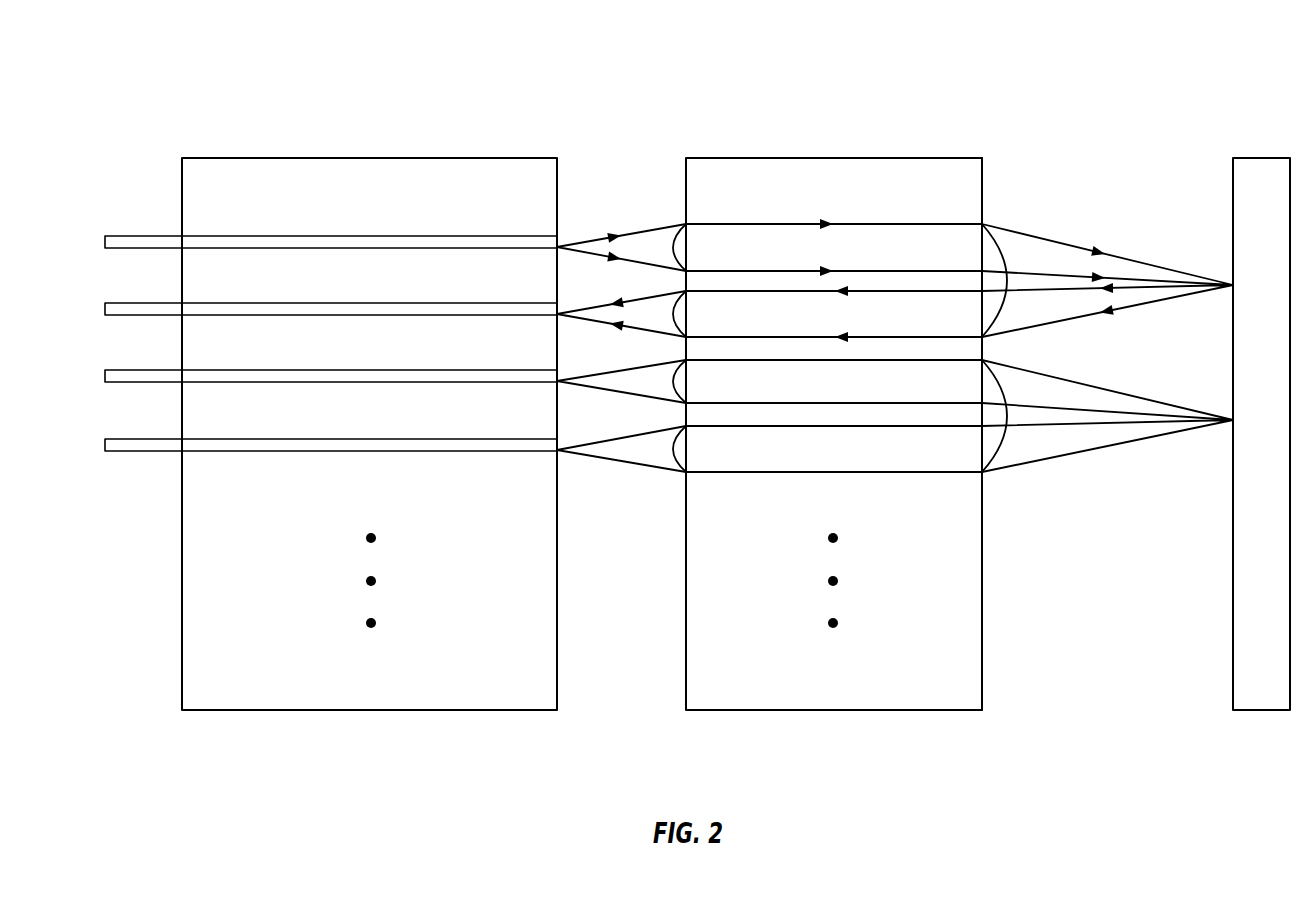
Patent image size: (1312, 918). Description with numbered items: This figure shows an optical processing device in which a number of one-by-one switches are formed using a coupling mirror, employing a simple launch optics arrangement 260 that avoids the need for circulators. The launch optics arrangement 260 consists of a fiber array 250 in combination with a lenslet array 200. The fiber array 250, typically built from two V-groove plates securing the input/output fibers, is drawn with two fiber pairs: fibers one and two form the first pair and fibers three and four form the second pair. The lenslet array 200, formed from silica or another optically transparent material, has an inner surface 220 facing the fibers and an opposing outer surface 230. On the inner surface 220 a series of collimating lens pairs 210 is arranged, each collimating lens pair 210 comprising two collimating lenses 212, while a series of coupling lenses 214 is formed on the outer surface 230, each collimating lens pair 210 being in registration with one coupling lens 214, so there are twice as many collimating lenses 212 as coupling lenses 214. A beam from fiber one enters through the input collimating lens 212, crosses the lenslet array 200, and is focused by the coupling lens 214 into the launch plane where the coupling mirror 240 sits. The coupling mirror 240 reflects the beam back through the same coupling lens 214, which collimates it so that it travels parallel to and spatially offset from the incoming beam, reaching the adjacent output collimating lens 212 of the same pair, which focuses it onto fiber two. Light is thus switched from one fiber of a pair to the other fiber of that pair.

The lenslet array 200 is at (955, 697).
The collimating lens pair 210 is at (621, 346).
The collimating lens 212 is at (688, 240).
The coupling lens 214 is at (1107, 355).
The inner surface 220 is at (710, 643).
The outer surface 230 is at (982, 648).
The coupling mirror 240 is at (1248, 643).
The fiber array 250 is at (203, 643).
The launch optics arrangement 260 is at (740, 717).